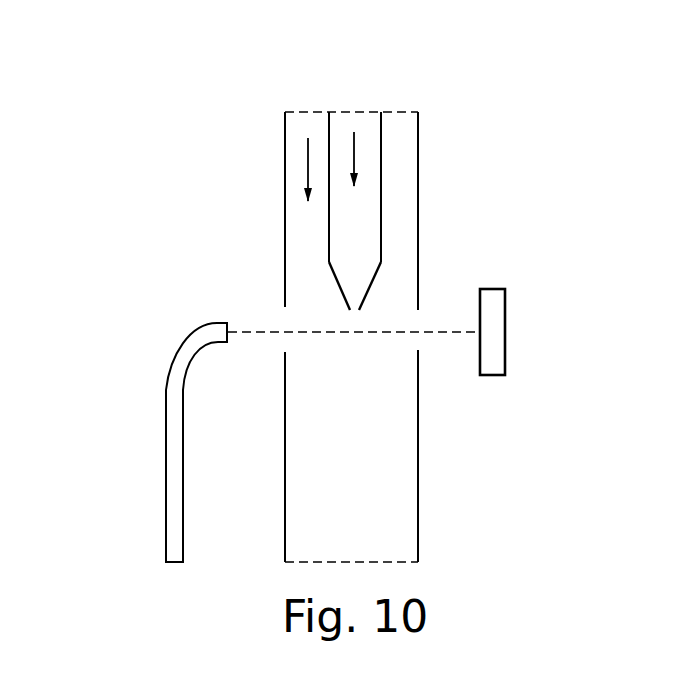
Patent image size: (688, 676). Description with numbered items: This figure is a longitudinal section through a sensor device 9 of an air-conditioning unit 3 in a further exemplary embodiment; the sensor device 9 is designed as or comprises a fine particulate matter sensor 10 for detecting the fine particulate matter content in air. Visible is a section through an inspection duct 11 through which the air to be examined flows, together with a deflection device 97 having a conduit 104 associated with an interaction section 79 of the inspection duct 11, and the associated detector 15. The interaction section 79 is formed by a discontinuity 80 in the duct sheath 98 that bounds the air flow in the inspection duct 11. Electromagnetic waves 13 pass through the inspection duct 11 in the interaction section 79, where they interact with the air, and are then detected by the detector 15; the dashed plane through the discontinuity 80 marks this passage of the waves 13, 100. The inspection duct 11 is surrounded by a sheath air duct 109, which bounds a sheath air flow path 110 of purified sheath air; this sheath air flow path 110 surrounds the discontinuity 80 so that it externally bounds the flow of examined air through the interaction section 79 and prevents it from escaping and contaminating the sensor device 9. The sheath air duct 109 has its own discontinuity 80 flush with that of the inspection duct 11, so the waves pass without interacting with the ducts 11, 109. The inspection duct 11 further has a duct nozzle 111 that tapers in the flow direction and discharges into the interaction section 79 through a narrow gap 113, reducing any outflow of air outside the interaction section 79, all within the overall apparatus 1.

The apparatus 1 is at (543, 119).
The air-conditioning unit 3 is at (152, 122).
The sensor device 9 is at (92, 161).
The fine particulate matter sensor 10 is at (120, 207).
The inspection duct 11 is at (385, 128).
The electromagnetic waves 13 is at (376, 285).
The detector 15 is at (505, 322).
The interaction section 79 is at (282, 316).
The discontinuity 80 is at (362, 322).
The deflection device 97 is at (149, 410).
The duct sheath 98 is at (381, 164).
The plane 100 is at (450, 331).
The conduit 104 is at (166, 509).
The sheath air duct 109 is at (279, 183).
The sheath air flow path 110 is at (307, 140).
The duct nozzle 111 is at (335, 280).
The gap 113 is at (350, 311).